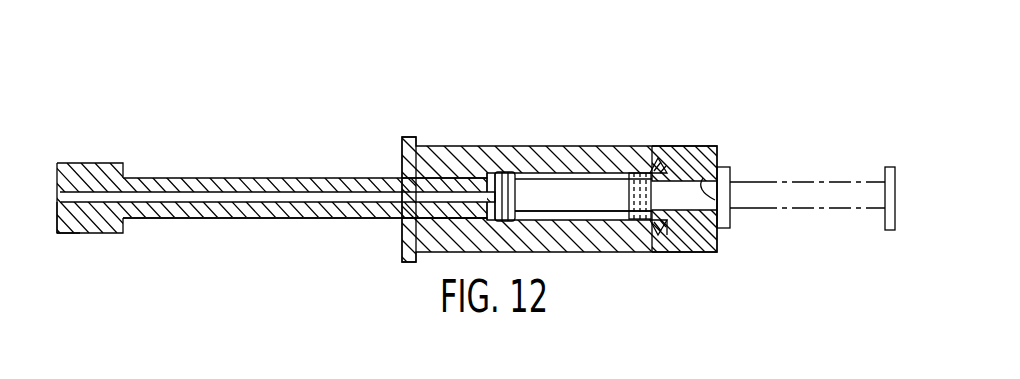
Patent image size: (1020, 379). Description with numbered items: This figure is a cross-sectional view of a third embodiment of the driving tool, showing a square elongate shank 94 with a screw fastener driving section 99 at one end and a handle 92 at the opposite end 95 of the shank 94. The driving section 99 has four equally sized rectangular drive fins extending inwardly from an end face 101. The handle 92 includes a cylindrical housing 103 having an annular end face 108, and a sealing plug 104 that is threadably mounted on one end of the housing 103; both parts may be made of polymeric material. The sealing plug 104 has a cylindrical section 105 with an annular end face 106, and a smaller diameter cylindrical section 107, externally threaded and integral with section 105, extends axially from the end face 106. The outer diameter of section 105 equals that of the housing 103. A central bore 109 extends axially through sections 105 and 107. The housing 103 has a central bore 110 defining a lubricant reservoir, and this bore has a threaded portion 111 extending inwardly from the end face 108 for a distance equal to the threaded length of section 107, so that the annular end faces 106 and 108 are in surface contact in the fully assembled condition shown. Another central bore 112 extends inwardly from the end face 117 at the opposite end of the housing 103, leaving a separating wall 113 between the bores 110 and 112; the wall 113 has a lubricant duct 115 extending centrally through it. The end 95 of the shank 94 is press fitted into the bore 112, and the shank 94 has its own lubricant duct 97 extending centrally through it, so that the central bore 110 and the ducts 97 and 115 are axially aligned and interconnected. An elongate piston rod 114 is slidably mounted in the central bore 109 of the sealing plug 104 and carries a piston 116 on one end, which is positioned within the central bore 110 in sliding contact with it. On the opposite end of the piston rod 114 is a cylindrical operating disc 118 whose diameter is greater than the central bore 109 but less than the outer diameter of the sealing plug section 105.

The handle 92 is at (541, 57).
The square elongate shank 94 is at (249, 217).
The opposite end of shank 95 is at (436, 238).
The lubricant duct 97 is at (225, 198).
The screw fastener driving section 99 is at (84, 150).
The end face 101 is at (57, 224).
The cylindrical housing 103 is at (620, 177).
The sealing plug 104 is at (721, 146).
The cylindrical section 105 is at (703, 236).
The annular end face 106 is at (688, 238).
The smaller diameter cylindrical section 107 is at (654, 170).
The annular end face 108 is at (664, 165).
The central bore 109 is at (715, 200).
The central bore 110 is at (583, 215).
The threaded portion 111 is at (657, 228).
The central bore 112 is at (400, 216).
The separating wall 113 is at (492, 192).
The elongate piston rod 114 is at (552, 193).
The lubricant duct 115 is at (480, 195).
The piston 116 is at (497, 174).
The end face 117 is at (403, 251).
The cylindrical operating disc 118 is at (727, 217).